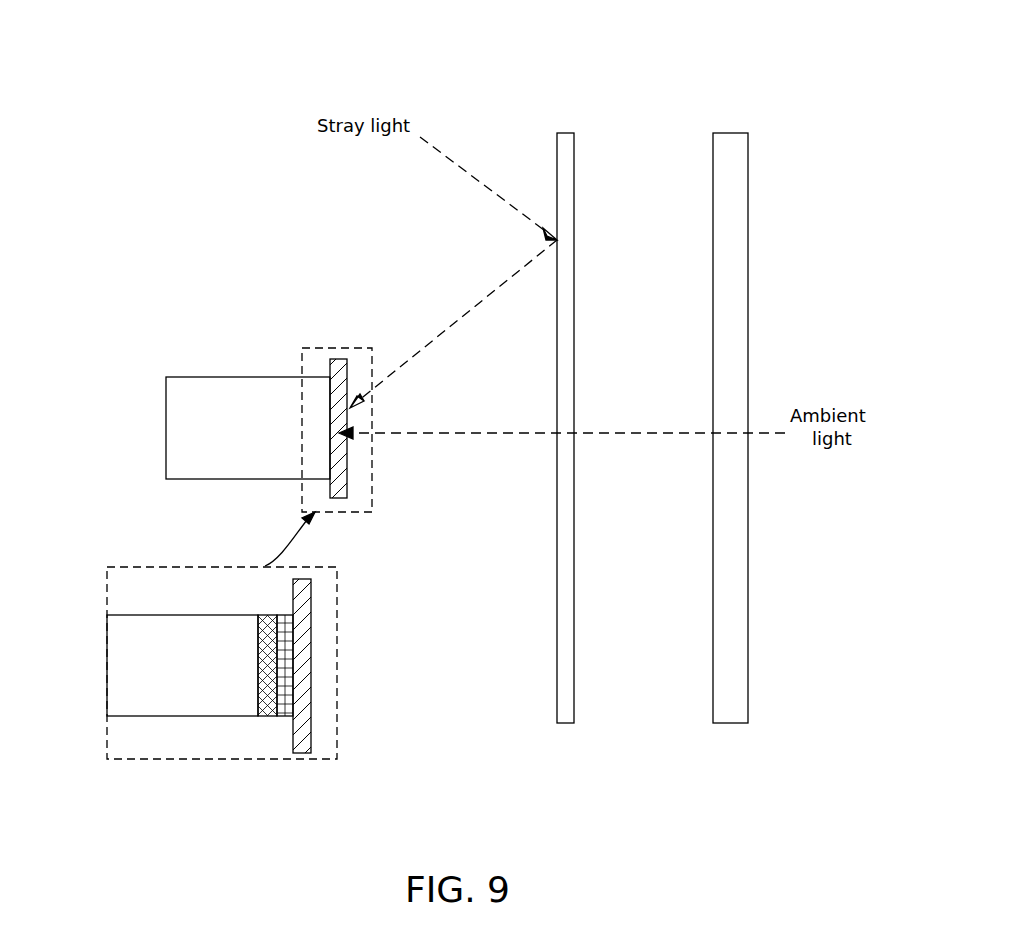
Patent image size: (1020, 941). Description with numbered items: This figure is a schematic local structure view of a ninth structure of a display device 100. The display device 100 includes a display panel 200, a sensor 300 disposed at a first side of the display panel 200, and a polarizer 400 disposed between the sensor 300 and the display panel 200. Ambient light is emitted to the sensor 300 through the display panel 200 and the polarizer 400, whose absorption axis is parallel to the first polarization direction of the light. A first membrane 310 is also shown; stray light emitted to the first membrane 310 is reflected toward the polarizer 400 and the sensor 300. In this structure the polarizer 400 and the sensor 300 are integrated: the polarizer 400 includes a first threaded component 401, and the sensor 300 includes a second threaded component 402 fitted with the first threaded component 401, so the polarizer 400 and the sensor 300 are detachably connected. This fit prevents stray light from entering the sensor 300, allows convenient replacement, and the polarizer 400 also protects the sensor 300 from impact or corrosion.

The display device 100 is at (141, 44).
The display panel 200 is at (713, 148).
The sensor 300 is at (217, 377).
The first membrane 310 is at (557, 158).
The polarizer 400 is at (335, 359).
The first threaded component 401 is at (288, 716).
The second threaded component 402 is at (267, 716).